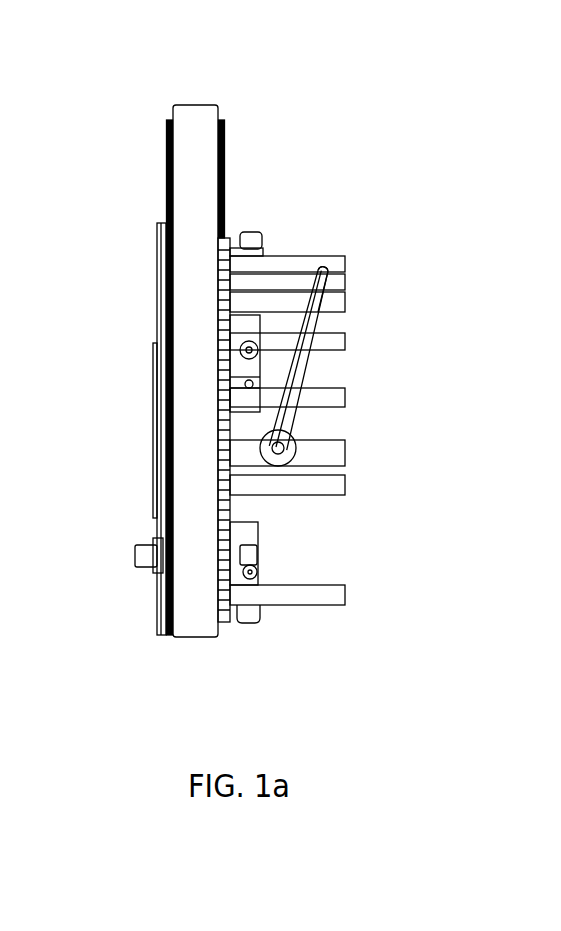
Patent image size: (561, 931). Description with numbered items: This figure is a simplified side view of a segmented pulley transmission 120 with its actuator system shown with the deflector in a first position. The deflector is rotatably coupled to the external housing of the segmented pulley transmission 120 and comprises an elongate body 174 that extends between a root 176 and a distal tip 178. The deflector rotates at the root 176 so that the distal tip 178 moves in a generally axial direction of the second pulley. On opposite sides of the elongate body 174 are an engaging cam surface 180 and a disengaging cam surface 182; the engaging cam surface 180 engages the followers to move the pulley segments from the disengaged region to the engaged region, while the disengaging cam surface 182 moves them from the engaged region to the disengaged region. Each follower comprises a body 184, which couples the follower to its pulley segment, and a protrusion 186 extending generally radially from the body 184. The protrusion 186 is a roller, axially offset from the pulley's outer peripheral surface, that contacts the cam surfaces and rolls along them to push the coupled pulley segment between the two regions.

The segmented pulley transmission 120 is at (111, 151).
The elongate body 174 is at (303, 372).
The root 176 is at (290, 443).
The distal tip 178 is at (327, 280).
The engaging cam surface 180 is at (302, 318).
The disengaging cam surface 182 is at (322, 318).
The body 184 is at (247, 331).
The protrusion 186 is at (240, 360).